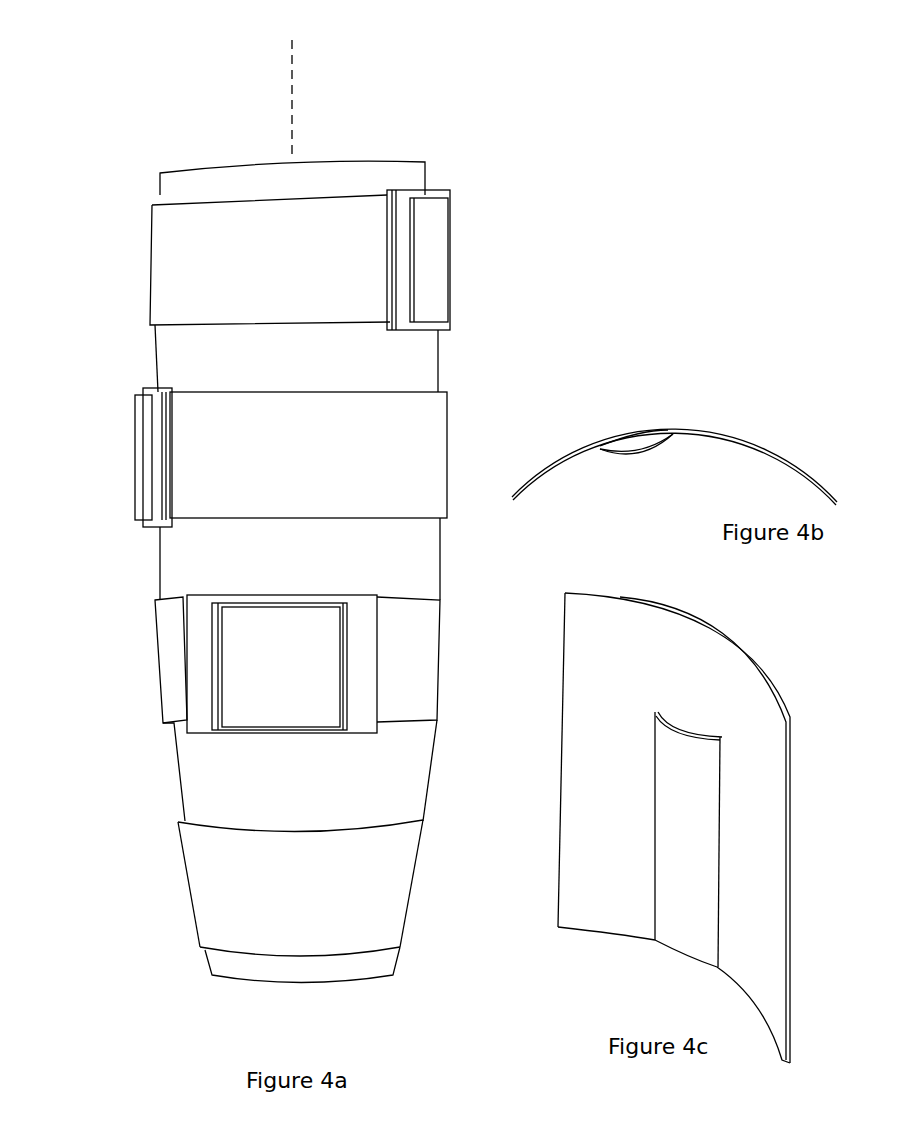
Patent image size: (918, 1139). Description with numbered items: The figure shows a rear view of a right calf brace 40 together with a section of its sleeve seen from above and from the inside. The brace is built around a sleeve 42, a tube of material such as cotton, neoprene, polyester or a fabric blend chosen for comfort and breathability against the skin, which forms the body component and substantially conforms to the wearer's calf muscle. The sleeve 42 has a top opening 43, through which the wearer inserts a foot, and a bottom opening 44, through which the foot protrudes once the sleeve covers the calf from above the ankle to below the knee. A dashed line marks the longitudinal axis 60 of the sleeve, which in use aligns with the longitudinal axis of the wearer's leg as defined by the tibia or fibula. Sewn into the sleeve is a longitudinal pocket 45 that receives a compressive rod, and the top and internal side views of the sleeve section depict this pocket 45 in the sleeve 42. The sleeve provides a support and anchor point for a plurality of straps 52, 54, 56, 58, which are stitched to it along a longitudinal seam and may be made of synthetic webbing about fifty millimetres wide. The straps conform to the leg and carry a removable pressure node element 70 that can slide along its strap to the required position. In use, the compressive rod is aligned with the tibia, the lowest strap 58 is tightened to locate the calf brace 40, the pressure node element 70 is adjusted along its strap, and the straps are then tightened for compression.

In FIG. 4a, the calf brace 40 is at (135, 90).
In FIG. 4a, the sleeve 42 is at (155, 355).
In FIG. 4b, the sleeve 42 is at (712, 429).
In FIG. 4c, the sleeve 42 is at (636, 616).
In FIG. 4a, the top opening 43 is at (215, 166).
In FIG. 4a, the bottom opening 44 is at (305, 983).
In FIG. 4b, the longitudinal pocket 45 is at (630, 453).
In FIG. 4c, the longitudinal pocket 45 is at (680, 948).
In FIG. 4a, the strap 52 is at (148, 270).
In FIG. 4a, the strap 54 is at (428, 436).
In FIG. 4a, the strap 56 is at (160, 686).
In FIG. 4a, the lowest strap 58 is at (188, 885).
In FIG. 4a, the longitudinal axis 60 is at (296, 57).
In FIG. 4a, the pressure node element 70 is at (207, 722).